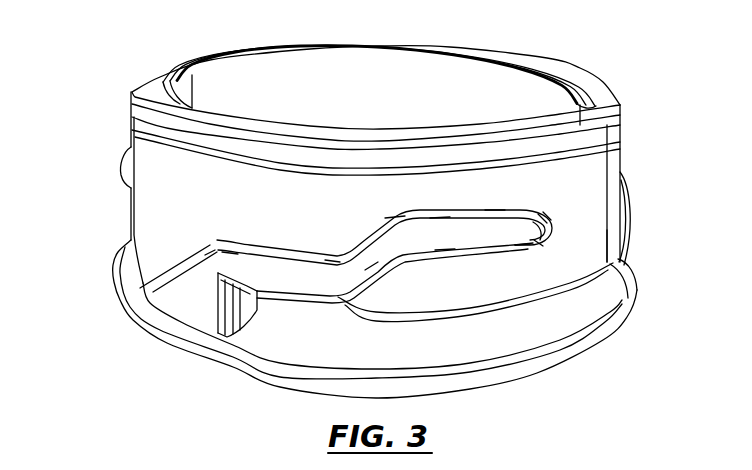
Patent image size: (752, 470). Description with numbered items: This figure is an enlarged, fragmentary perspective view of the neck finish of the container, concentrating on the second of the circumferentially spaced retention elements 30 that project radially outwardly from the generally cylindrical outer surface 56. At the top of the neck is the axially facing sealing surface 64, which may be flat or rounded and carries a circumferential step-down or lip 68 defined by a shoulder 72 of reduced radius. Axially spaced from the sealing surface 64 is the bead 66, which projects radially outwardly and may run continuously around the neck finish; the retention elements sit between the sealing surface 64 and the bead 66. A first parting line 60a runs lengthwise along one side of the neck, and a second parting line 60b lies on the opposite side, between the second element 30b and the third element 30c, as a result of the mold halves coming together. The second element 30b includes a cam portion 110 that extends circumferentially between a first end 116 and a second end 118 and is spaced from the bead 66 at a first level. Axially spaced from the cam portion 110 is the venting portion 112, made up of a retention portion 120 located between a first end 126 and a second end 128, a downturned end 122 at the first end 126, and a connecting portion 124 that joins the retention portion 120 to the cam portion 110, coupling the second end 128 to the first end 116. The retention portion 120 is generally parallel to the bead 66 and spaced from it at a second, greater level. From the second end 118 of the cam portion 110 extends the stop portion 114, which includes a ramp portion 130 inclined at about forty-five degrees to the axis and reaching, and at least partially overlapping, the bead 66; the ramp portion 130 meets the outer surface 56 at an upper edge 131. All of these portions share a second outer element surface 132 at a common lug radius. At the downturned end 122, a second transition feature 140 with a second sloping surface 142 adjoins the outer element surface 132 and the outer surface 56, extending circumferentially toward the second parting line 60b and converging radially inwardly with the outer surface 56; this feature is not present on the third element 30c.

The retention elements 30 is at (124, 163).
The second element 30b is at (112, 171).
The third element 30c is at (632, 203).
The outer surface 56 is at (622, 157).
The first parting line 60a is at (191, 88).
The second parting line 60b is at (606, 226).
The sealing surface 64 is at (596, 90).
The bead 66 is at (606, 317).
The lip 68 is at (178, 103).
The shoulder 72 is at (160, 82).
The cam portion 110 is at (280, 274).
The venting portion 112 is at (437, 238).
The stop portion 114 is at (210, 303).
The first end 116 is at (333, 277).
The second end 118 is at (230, 268).
The retention portion 120 is at (446, 244).
The downturned end 122 is at (523, 242).
The connecting portion 124 is at (372, 270).
The first end 126 is at (495, 230).
The second end 128 is at (397, 240).
The ramp portion 130 is at (170, 247).
The upper edge 131 is at (158, 258).
The second outer element surface 132 is at (473, 245).
The second transition feature 140 is at (541, 213).
The second sloping surface 142 is at (540, 236).